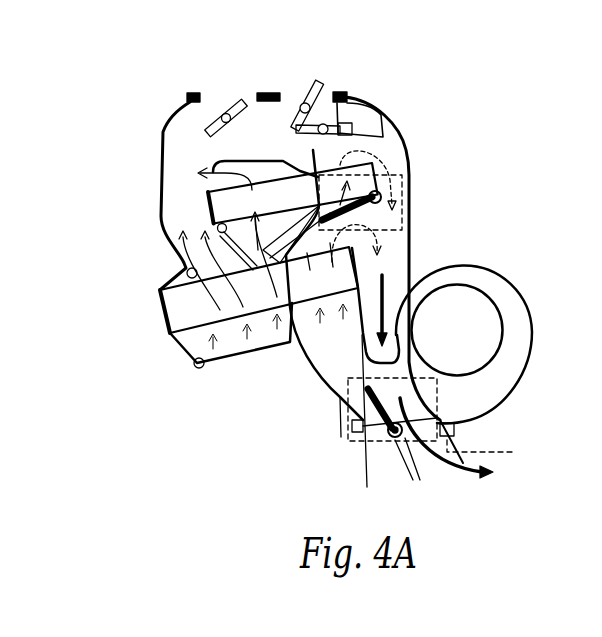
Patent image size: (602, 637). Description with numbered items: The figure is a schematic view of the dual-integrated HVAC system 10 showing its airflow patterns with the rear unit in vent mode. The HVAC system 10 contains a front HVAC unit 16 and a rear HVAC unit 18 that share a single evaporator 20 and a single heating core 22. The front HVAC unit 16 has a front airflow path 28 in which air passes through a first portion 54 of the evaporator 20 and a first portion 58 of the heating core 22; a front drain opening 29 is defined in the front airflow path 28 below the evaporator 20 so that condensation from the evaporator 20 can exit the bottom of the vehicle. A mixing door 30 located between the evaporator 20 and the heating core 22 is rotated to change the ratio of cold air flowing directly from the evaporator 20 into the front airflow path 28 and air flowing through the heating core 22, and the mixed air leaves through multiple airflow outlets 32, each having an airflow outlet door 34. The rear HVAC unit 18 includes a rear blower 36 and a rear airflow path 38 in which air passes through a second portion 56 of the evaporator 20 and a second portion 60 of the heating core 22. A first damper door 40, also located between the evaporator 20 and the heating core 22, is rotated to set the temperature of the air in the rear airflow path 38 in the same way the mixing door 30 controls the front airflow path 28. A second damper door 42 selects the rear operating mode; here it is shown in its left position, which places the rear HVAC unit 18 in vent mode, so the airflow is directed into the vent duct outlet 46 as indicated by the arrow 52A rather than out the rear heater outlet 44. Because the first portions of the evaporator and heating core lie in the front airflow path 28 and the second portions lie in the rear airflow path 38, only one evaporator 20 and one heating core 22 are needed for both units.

The HVAC system 10 is at (138, 108).
The front HVAC unit 16 is at (147, 172).
The rear HVAC unit 18 is at (428, 225).
The evaporator 20 is at (168, 328).
The heating core 22 is at (370, 166).
The front airflow path 28 is at (190, 218).
The front drain opening 29 is at (194, 365).
The mixing door 30 is at (240, 250).
The airflow outlets 32 is at (213, 102).
The airflow outlet door 34 is at (236, 105).
The rear blower 36 is at (502, 340).
The rear airflow path 38 is at (392, 230).
The first damper door 40 is at (370, 168).
The second damper door 42 is at (368, 392).
The rear heater outlet 44 is at (388, 476).
The vent duct outlet 46 is at (475, 457).
The arrow 52A is at (466, 474).
The first portion of the evaporator 54 is at (177, 305).
The second portion of the evaporator 56 is at (347, 283).
The first portion of the heating core 58 is at (222, 204).
The second portion of the heating core 60 is at (360, 187).